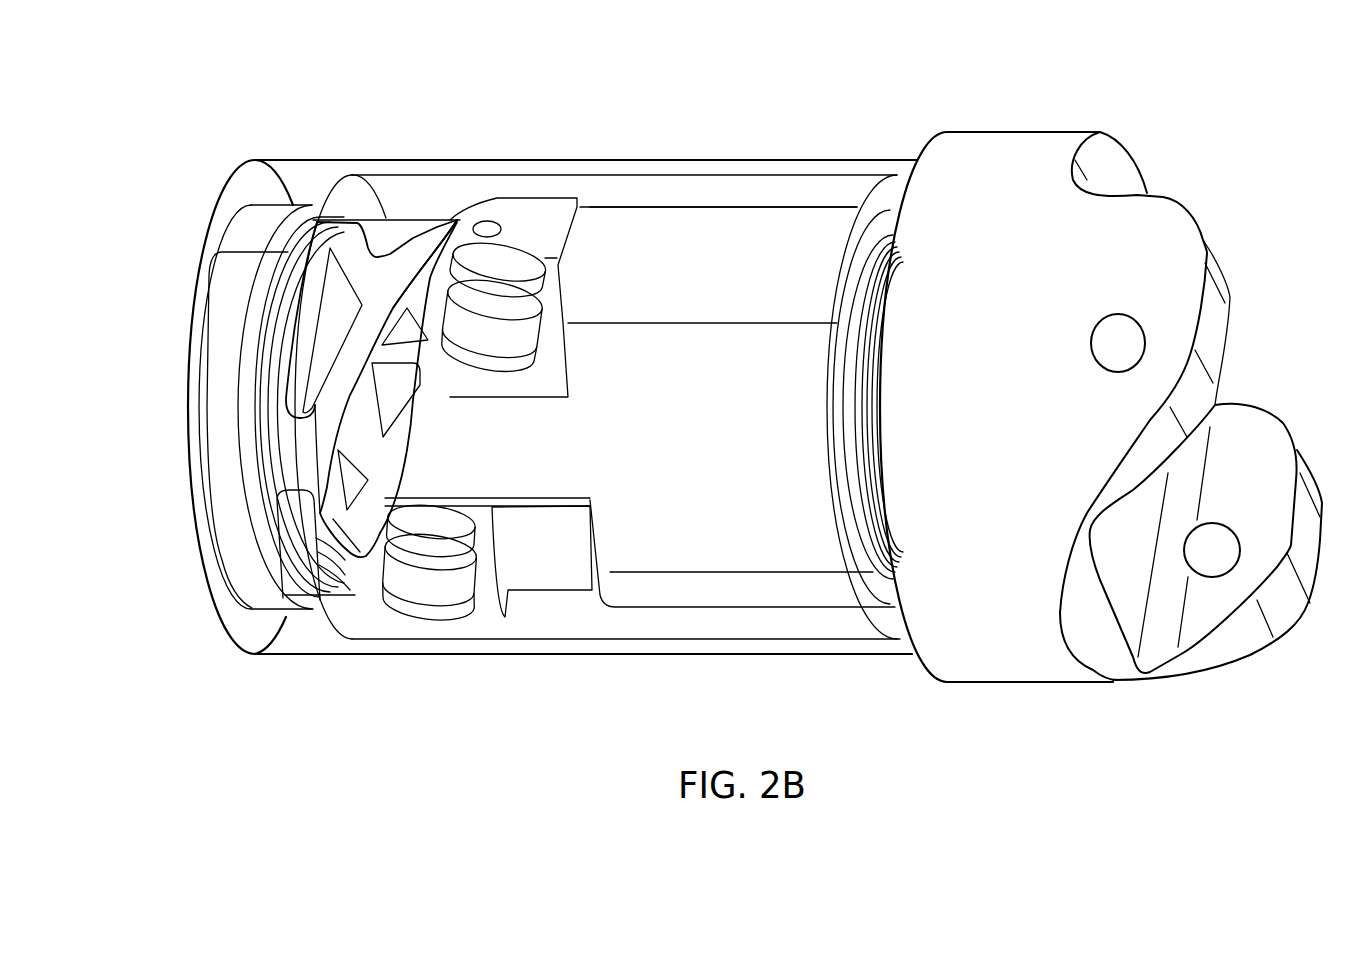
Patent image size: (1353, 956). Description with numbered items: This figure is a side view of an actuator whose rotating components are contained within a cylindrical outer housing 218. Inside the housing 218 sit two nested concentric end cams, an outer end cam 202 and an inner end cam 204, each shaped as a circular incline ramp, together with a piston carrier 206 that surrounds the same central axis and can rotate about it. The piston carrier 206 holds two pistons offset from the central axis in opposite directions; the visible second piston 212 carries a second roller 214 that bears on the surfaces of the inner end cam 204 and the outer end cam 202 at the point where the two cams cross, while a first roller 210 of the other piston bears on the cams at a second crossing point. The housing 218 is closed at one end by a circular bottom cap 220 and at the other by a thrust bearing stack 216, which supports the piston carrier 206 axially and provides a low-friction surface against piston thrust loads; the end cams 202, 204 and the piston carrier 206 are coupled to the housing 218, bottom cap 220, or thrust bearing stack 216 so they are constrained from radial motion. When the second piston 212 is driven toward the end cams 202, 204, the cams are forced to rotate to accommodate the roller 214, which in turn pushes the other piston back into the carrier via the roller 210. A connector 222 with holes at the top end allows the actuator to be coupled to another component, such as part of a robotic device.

The outer end cam 202 is at (428, 247).
The inner end cam 204 is at (400, 457).
The piston carrier 206 is at (742, 417).
The first roller 210 is at (513, 290).
The second piston 212 is at (538, 553).
The second roller 214 is at (427, 580).
The thrust bearing stack 216 is at (884, 177).
The cylindrical outer housing 218 is at (620, 160).
The circular bottom cap 220 is at (191, 330).
The connector 222 is at (1182, 228).